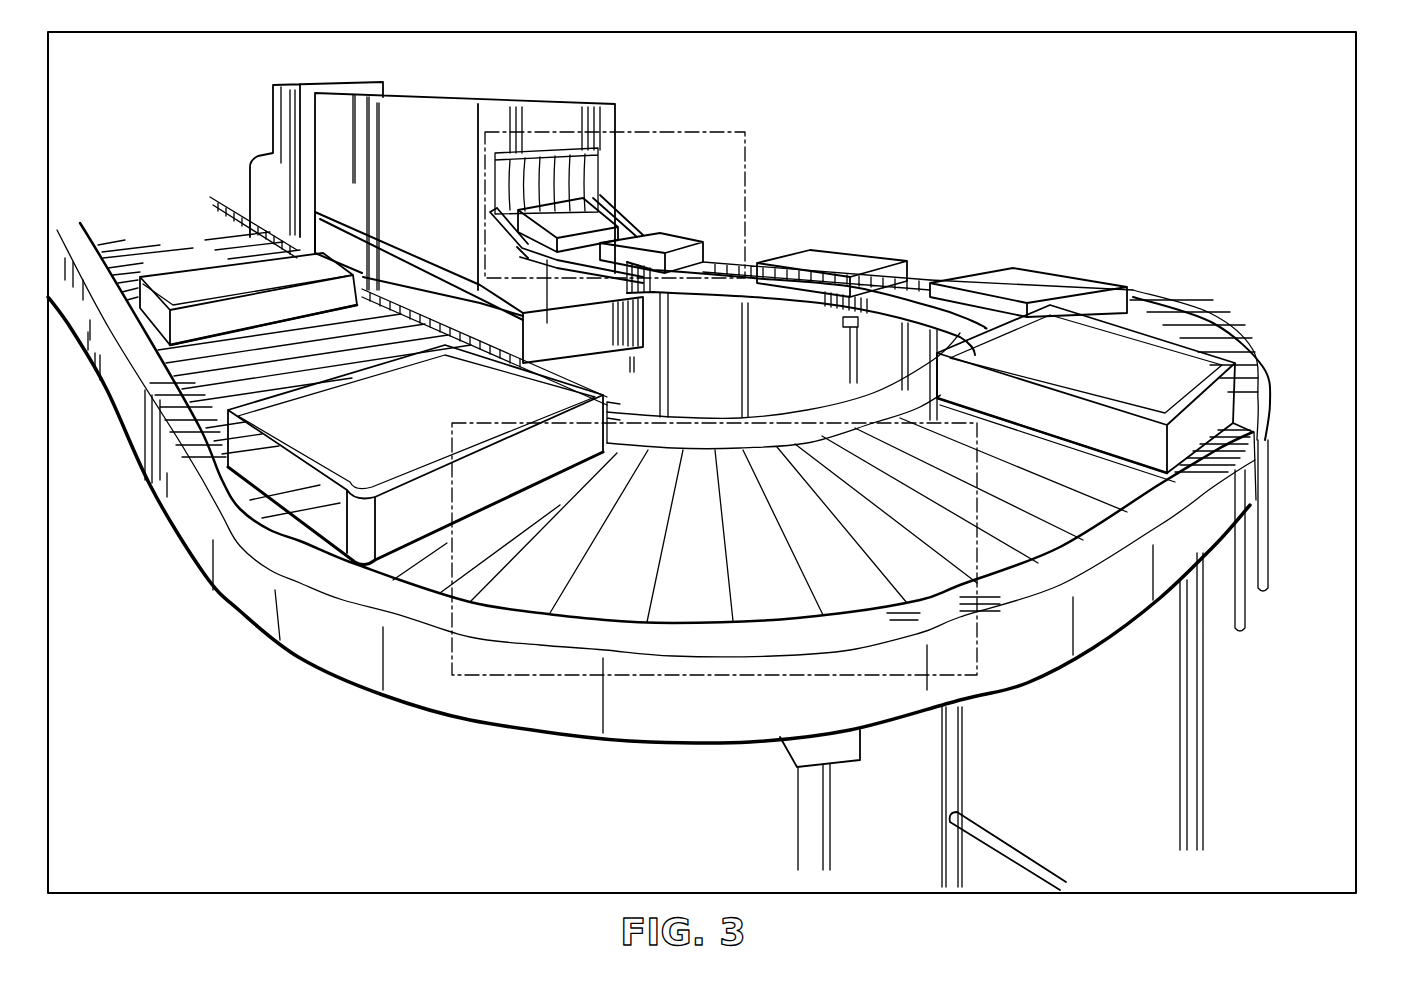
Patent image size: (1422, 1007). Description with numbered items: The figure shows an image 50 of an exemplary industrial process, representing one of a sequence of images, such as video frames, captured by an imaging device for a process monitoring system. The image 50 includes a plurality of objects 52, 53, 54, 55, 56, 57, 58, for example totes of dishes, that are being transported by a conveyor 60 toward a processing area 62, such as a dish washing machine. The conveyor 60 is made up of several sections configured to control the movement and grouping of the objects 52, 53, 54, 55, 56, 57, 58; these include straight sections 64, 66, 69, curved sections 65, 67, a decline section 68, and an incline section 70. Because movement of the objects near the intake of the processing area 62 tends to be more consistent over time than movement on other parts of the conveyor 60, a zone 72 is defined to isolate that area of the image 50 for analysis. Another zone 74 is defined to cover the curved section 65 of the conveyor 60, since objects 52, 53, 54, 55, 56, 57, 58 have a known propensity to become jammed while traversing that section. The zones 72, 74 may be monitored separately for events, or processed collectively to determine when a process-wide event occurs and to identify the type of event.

The image 50 is at (734, 465).
The object 52 is at (207, 272).
The object 53 is at (388, 428).
The object 54 is at (1225, 403).
The object 55 is at (1045, 281).
The object 56 is at (851, 259).
The object 57 is at (672, 238).
The object 58 is at (591, 220).
The conveyor 60 is at (770, 410).
The processing area 62 is at (618, 103).
The straight section 64 is at (185, 518).
The curved section 65 is at (423, 716).
The straight section 66 is at (1242, 478).
The curved section 67 is at (1178, 305).
The decline section 68 is at (722, 300).
The straight section 69 is at (591, 278).
The incline section 70 is at (523, 240).
The zone 72 is at (716, 132).
The zone 74 is at (985, 657).